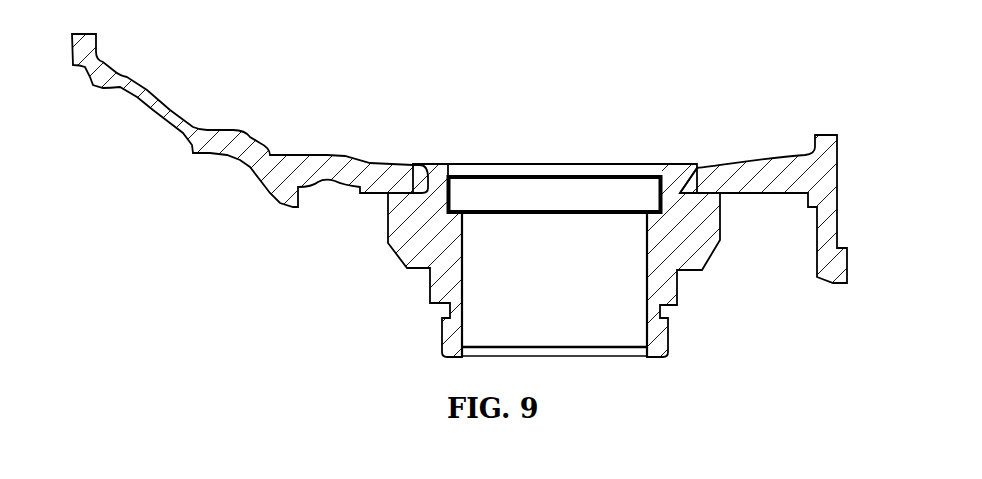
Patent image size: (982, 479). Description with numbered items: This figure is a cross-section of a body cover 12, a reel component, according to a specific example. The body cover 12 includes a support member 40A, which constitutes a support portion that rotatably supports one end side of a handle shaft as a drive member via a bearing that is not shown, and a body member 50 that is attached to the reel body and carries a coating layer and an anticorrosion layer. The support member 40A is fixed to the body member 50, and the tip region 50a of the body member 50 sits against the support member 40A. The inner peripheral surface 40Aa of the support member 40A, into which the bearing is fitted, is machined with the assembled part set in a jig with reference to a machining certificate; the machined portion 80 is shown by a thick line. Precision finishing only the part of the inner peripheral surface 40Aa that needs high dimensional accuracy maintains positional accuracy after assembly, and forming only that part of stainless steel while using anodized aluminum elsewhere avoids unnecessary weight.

The body cover 12 is at (770, 104).
The support member 40A is at (700, 249).
The inner peripheral surface 40Aa is at (450, 191).
The machined portion 80 is at (510, 210).
The body member 50 is at (820, 175).
The flange inner end surface 50a is at (680, 183).